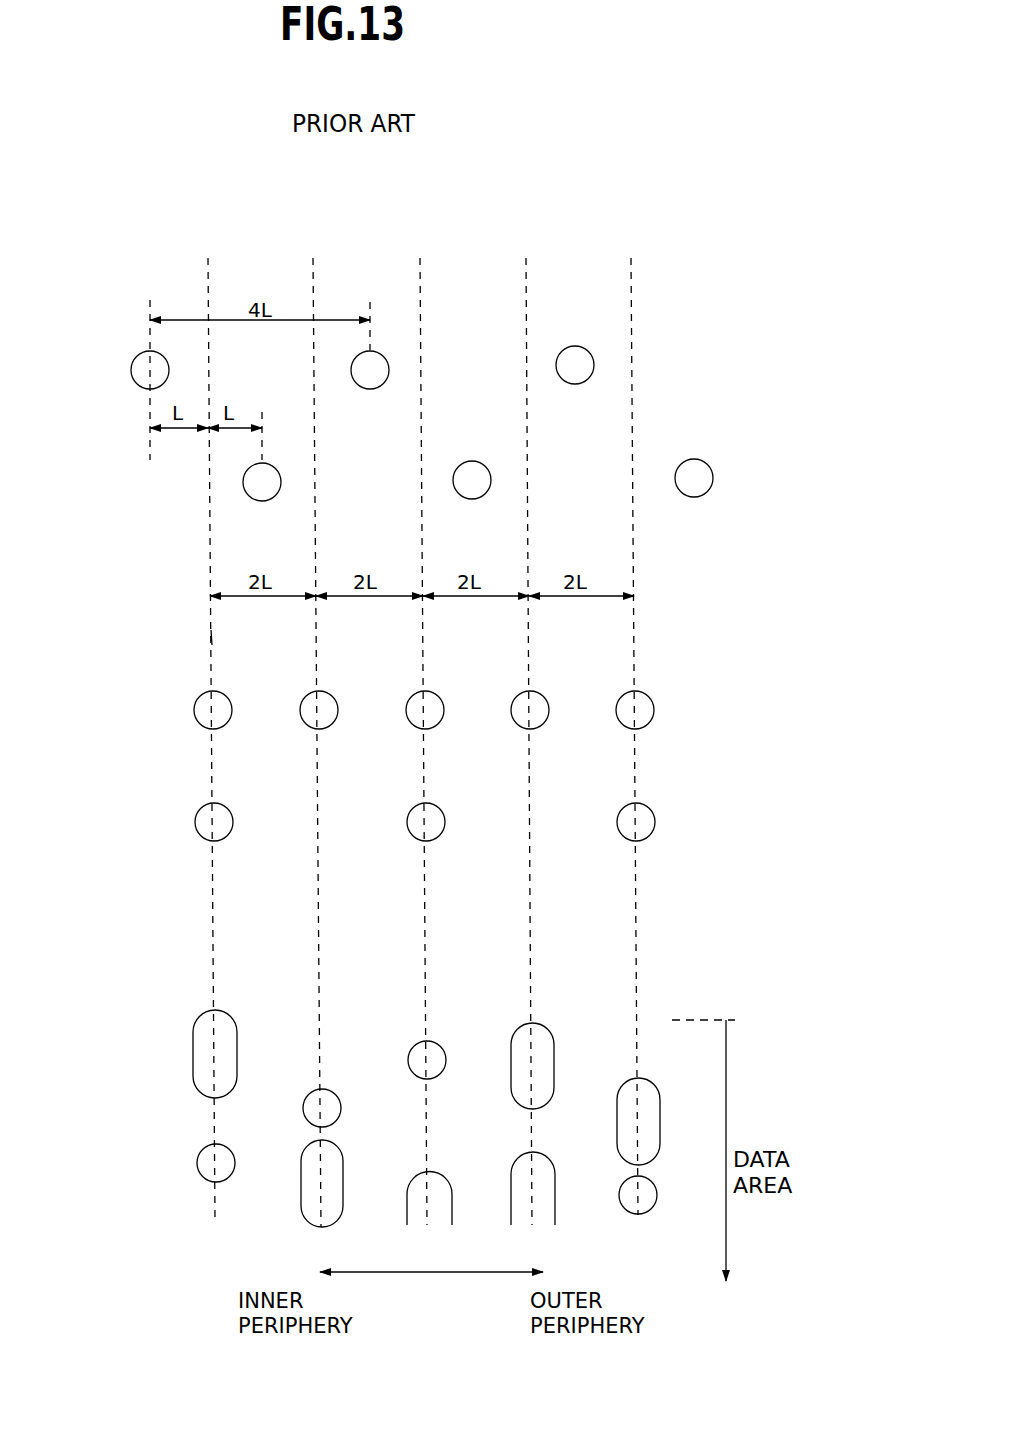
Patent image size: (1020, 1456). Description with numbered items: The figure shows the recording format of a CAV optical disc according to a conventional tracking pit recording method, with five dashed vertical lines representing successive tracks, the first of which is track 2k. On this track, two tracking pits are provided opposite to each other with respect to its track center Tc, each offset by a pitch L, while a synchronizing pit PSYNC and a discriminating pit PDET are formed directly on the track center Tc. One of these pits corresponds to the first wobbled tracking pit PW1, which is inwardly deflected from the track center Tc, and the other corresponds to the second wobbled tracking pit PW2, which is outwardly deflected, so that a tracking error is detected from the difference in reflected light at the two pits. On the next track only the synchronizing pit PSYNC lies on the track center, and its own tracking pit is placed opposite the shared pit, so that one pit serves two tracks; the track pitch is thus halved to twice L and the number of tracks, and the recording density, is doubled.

The track 2k is at (208, 728).
The first wobbled tracking pit PW1 is at (597, 357).
The second wobbled tracking pit PW2 is at (716, 477).
The track center Tc is at (212, 640).
The synchronizing pit PSYNC is at (192, 710).
The discriminating pit PDET is at (193, 818).